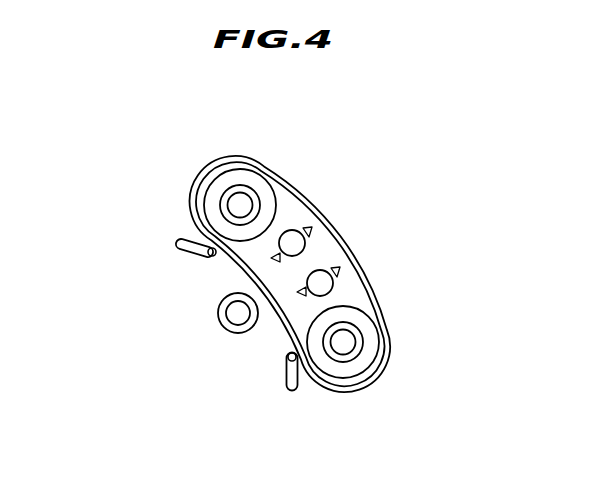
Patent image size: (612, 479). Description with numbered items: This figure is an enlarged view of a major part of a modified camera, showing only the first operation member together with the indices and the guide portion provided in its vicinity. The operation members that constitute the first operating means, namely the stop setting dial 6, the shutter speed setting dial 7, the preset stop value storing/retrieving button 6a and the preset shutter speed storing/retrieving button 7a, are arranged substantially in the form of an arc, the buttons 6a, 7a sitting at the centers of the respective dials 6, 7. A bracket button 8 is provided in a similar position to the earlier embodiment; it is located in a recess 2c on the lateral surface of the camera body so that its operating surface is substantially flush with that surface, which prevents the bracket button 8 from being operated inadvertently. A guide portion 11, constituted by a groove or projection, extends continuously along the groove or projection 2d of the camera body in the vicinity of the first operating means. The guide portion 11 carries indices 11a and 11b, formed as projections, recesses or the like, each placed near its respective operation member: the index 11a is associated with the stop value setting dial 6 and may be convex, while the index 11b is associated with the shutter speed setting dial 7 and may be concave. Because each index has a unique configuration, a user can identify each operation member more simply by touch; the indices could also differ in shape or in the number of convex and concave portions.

The recess 2c is at (240, 334).
The groove or projection 2d is at (310, 202).
The stop setting dial 6 is at (222, 193).
The preset stop value storing/retrieving button 6a is at (243, 202).
The shutter speed setting dial 7 is at (371, 337).
The preset shutter speed storing/retrieving button 7a is at (343, 342).
The bracket button 8 is at (231, 314).
The guide portion 11 is at (188, 233).
The index 11a is at (213, 256).
The index 11b is at (298, 385).